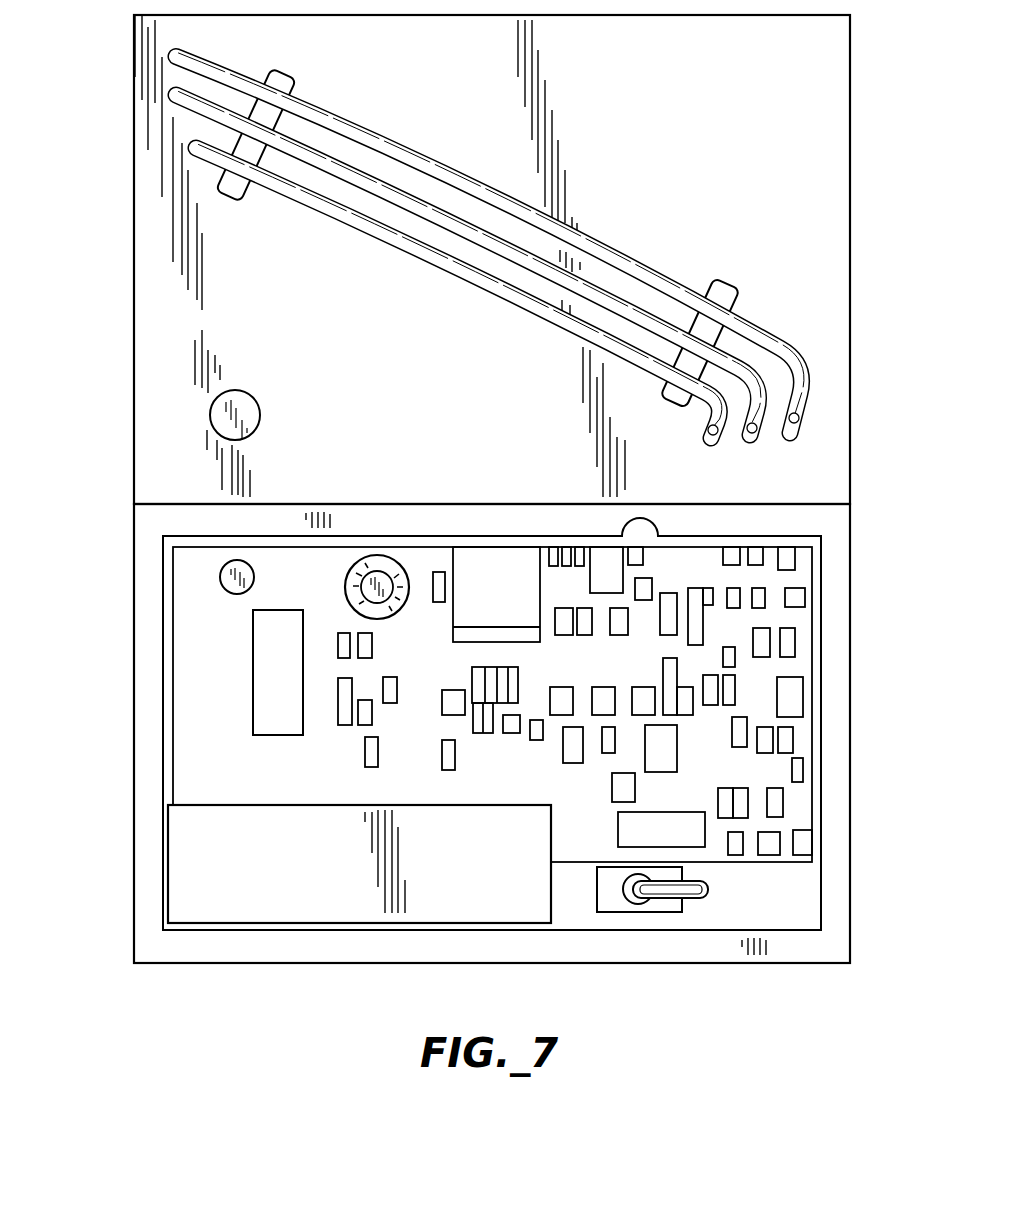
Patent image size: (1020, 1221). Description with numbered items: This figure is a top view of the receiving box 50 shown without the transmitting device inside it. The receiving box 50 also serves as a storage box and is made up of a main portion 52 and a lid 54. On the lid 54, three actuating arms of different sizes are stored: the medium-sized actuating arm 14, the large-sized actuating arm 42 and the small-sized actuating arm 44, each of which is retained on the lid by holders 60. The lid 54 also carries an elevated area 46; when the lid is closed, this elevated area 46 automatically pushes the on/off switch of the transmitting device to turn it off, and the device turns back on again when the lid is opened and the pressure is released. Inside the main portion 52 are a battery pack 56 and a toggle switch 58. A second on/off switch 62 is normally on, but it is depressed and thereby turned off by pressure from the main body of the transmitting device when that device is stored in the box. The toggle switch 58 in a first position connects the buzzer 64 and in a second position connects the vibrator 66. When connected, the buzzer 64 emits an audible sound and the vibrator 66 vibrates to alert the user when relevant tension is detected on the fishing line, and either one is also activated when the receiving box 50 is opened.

The receiving box 50 is at (104, 508).
The lid 54 is at (850, 134).
The main portion 52 is at (405, 963).
The large-sized actuating arm 42 is at (818, 355).
The actuating arm 14 is at (742, 444).
The small-sized actuating arm 44 is at (706, 447).
The holders 60 is at (229, 196).
The elevated area 46 is at (259, 410).
The battery pack 56 is at (168, 822).
The toggle switch 58 is at (633, 912).
The second on/off switch 62 is at (237, 594).
The buzzer 64 is at (346, 589).
The vibrator 66 is at (253, 692).